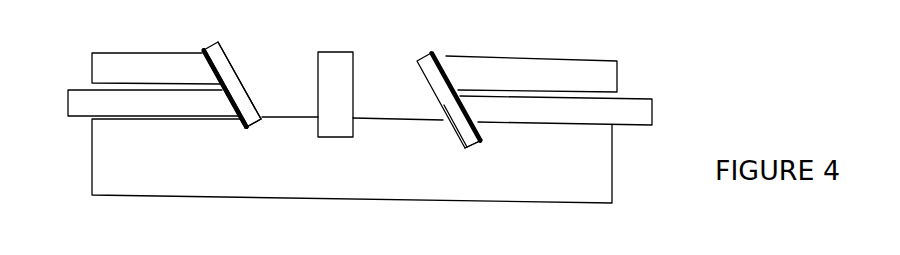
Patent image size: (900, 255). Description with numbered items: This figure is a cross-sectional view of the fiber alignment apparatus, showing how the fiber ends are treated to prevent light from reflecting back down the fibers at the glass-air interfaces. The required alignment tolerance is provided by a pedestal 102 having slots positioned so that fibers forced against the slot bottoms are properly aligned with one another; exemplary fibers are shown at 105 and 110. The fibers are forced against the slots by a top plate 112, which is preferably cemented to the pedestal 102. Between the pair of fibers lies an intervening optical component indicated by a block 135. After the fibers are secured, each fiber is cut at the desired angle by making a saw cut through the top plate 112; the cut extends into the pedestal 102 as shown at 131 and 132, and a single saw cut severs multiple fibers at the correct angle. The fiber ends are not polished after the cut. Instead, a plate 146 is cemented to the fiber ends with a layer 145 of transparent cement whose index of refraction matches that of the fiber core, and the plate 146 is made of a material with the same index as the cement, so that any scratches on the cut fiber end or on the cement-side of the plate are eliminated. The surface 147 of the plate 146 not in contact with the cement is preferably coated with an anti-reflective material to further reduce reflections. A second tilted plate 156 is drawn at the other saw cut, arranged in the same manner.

The pedestal 102 is at (598, 183).
The optical fiber 105 is at (78, 102).
The optical fiber 110 is at (648, 117).
The top plate 112 is at (615, 70).
The saw cut 131 is at (486, 149).
The saw cut 132 is at (262, 130).
The optical component block 135 is at (338, 57).
The layer of transparent cement 145 is at (231, 122).
The plate 146 is at (227, 50).
The surface of plate 147 is at (264, 99).
The second mirror 156 is at (443, 103).